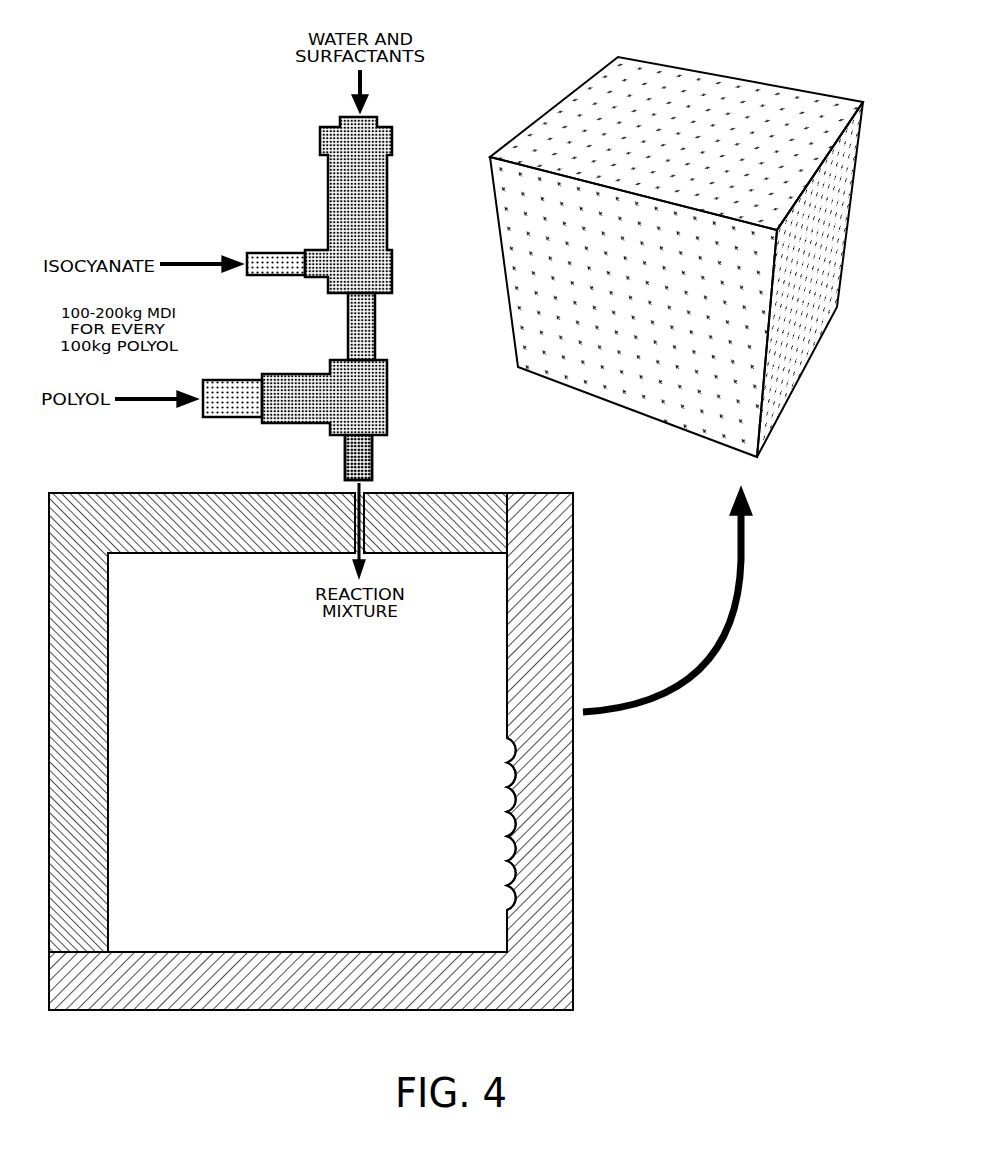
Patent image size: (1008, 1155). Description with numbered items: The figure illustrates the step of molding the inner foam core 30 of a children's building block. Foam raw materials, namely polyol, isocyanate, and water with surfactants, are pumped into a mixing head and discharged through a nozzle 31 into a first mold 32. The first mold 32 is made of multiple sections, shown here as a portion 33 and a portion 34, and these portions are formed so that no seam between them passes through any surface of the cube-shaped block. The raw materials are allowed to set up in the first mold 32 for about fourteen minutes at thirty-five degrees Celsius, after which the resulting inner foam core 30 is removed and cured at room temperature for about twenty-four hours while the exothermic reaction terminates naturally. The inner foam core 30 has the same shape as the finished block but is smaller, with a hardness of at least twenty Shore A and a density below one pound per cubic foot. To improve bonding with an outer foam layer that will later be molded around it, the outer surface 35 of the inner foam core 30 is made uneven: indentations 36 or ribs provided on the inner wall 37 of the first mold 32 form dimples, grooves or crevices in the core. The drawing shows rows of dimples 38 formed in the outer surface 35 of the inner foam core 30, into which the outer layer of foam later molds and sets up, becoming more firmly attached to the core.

The inner foam core 30 is at (690, 243).
The nozzle 31 is at (373, 472).
The first mold 32 is at (337, 733).
The portion 33 is at (139, 493).
The portion 34 is at (574, 861).
The outer surface 35 is at (804, 386).
The indentations 36 is at (508, 842).
The inner wall 37 is at (498, 665).
The dimples 38 is at (843, 110).